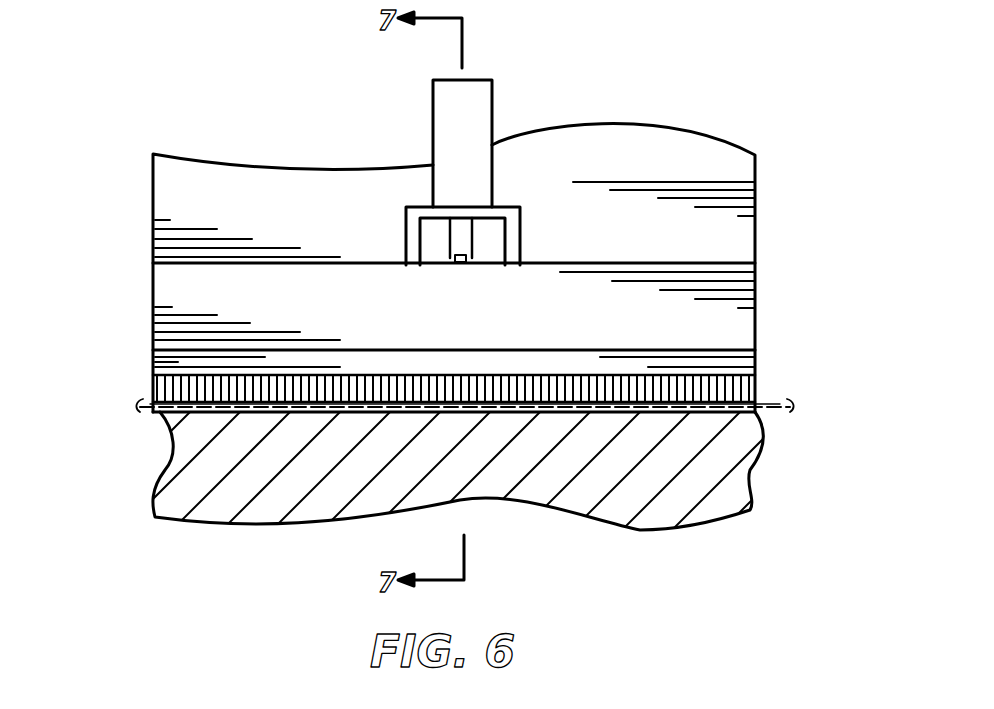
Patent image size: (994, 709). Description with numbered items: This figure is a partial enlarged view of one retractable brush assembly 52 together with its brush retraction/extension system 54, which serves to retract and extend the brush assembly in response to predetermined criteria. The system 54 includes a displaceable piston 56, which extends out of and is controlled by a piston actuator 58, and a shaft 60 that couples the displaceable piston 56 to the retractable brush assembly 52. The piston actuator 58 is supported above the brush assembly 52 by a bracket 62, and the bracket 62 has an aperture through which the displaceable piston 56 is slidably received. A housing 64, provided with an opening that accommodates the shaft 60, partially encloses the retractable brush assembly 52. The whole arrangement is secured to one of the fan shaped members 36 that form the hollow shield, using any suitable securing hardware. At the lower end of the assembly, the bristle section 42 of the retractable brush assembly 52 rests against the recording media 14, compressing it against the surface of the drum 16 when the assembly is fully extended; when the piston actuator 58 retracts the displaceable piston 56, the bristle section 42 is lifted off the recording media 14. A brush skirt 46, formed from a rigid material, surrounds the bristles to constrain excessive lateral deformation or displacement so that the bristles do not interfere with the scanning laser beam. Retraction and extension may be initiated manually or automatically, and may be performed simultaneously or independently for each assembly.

The recording media 14 is at (770, 405).
The drum 16 is at (738, 440).
The fan shaped member 36 is at (705, 157).
The bristle section 42 is at (153, 388).
The brush skirt 46 is at (175, 362).
The retractable brush assembly 52 is at (108, 277).
The brush retraction/extension system 54 is at (449, 172).
The displaceable piston 56 is at (520, 232).
The piston actuator 58 is at (492, 172).
The shaft 60 is at (466, 258).
The bracket 62 is at (406, 222).
The housing 64 is at (737, 330).